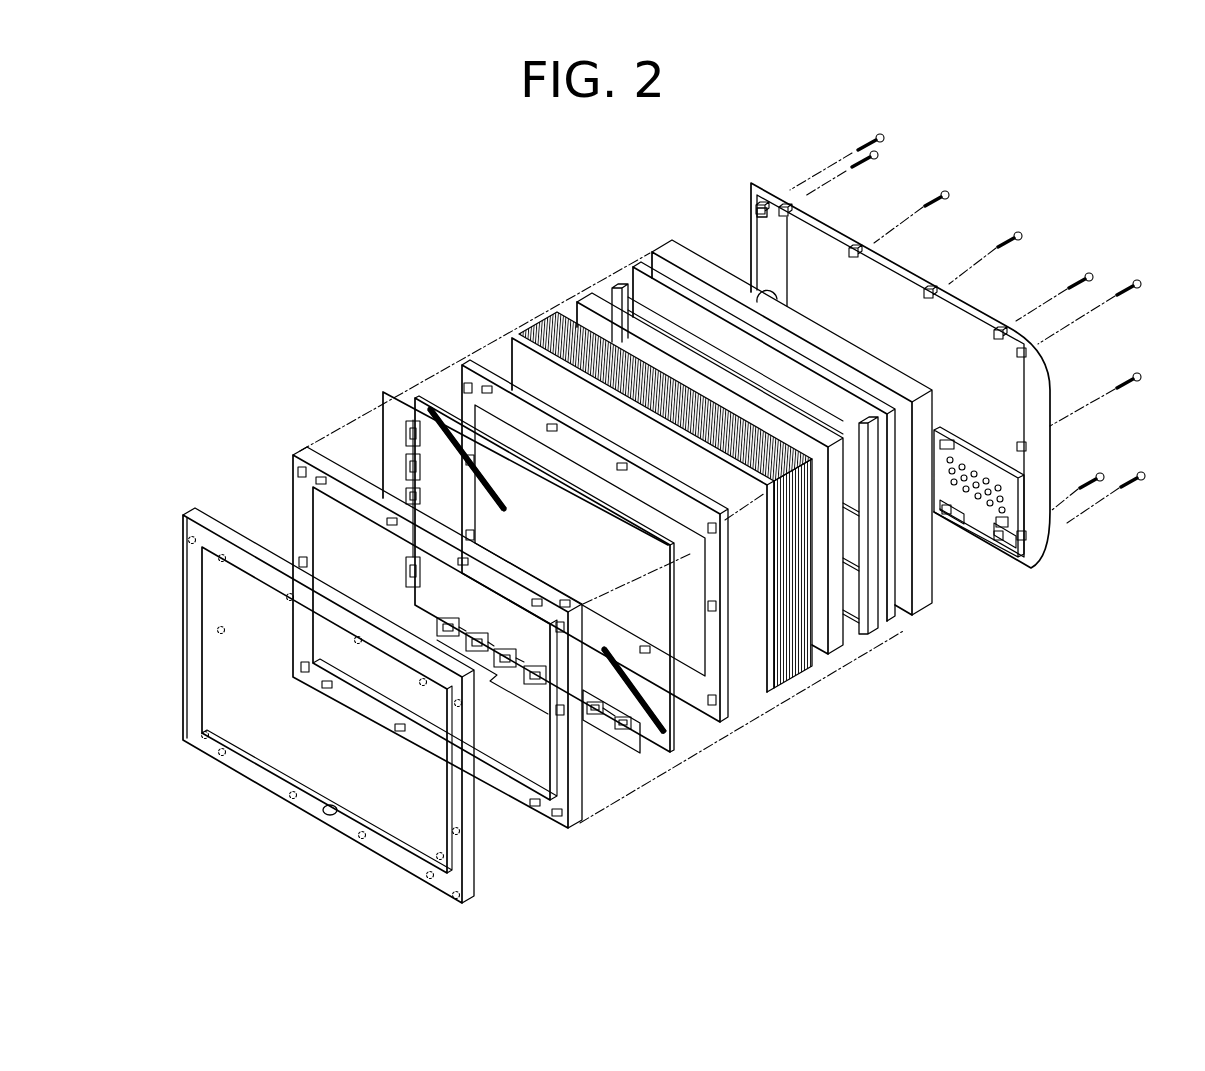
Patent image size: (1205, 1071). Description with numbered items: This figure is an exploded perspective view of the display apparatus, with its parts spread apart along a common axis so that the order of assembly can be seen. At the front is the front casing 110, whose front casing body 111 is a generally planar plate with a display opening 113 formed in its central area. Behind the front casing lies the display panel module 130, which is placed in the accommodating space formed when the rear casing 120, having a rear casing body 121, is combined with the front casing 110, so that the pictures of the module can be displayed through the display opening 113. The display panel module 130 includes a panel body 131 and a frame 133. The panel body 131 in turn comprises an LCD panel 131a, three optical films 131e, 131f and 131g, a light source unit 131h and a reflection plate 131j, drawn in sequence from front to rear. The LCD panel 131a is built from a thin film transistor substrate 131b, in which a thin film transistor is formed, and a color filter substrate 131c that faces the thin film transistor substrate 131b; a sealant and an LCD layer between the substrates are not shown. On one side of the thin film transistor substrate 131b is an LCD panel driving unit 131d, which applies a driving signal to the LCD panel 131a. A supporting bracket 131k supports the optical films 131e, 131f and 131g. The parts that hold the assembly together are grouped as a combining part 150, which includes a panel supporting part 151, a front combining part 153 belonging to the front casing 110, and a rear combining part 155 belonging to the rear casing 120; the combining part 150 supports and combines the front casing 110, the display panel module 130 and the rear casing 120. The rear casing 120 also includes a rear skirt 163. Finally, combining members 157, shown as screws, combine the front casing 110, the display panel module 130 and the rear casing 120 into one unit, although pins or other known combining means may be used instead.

The front casing 110 is at (112, 645).
The front casing body 111 is at (187, 653).
The display opening 113 is at (205, 690).
The rear casing 120 is at (900, 262).
The rear casing body 121 is at (1004, 404).
The display panel module 130 is at (205, 352).
The panel body 131 is at (1007, 743).
The LCD panel 131a is at (733, 836).
The thin film transistor substrate 131b is at (658, 747).
The color filter substrate 131c is at (670, 747).
The LCD panel driving unit 131d is at (625, 737).
The optical film 131e is at (772, 693).
The optical film 131f is at (808, 675).
The optical film 131g is at (840, 657).
The light source unit 131h is at (877, 633).
The reflection plate 131j is at (895, 626).
The supporting bracket 131k is at (723, 733).
The frame 133 is at (512, 793).
The combining part 150 is at (595, 126).
The panel supporting part 151 is at (465, 370).
The front combining part 153 is at (193, 508).
The rear combining part 155 is at (757, 212).
The combining member 157 is at (867, 138).
The rear skirt 163 is at (1040, 479).